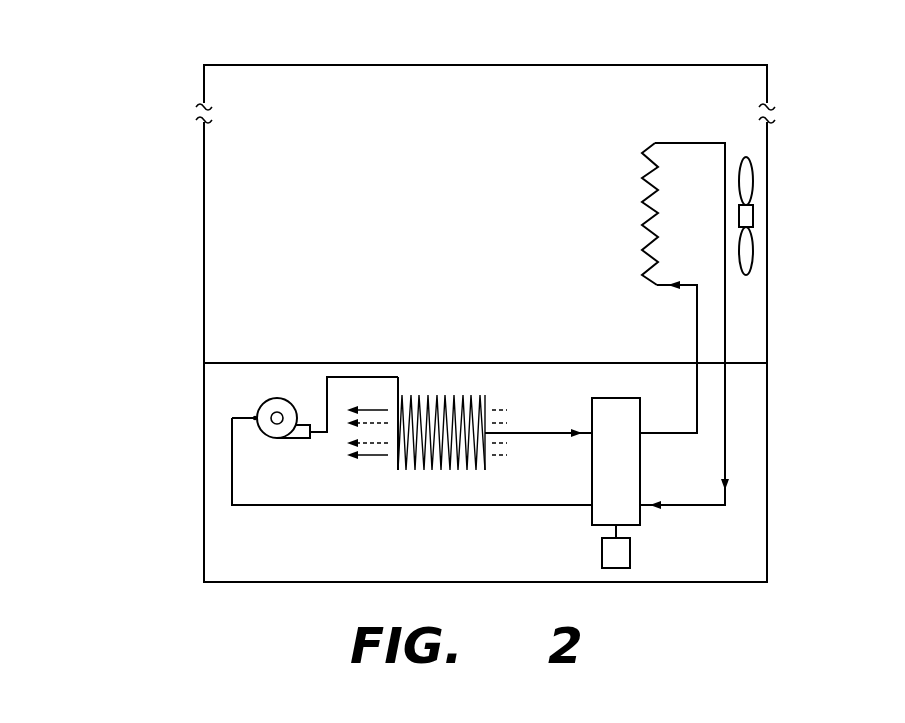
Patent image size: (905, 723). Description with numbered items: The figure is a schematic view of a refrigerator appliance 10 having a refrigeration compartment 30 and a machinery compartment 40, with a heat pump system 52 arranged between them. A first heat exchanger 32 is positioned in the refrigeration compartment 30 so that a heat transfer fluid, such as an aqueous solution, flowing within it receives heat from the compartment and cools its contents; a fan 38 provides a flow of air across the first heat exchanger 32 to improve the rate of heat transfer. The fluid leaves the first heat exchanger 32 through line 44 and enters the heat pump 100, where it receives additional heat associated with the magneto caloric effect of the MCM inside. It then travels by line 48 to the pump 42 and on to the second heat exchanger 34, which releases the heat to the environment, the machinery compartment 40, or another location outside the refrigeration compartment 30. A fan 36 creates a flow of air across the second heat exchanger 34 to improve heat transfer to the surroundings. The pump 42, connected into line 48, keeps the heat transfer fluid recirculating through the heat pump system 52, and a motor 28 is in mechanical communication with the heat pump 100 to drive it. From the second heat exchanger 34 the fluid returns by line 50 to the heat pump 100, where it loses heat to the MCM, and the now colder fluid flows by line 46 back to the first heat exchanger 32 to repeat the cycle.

The refrigerator appliance 10 is at (136, 158).
The motor 28 is at (602, 553).
The refrigeration compartment 30 is at (480, 98).
The first heat exchanger 32 is at (642, 181).
The second heat exchanger 34 is at (457, 393).
The fan 36 is at (378, 410).
The fan 38 is at (753, 187).
The machinery compartment 40 is at (226, 393).
The pump 42 is at (265, 400).
The line 44 is at (728, 328).
The line 46 is at (697, 338).
The line 48 is at (328, 376).
The line 50 is at (527, 430).
The heat pump system 52 is at (414, 344).
The heat pump 100 is at (613, 397).